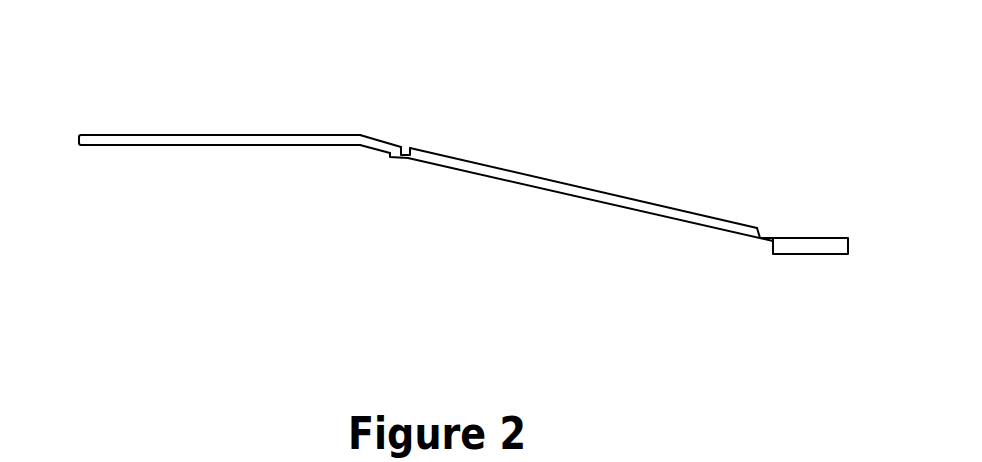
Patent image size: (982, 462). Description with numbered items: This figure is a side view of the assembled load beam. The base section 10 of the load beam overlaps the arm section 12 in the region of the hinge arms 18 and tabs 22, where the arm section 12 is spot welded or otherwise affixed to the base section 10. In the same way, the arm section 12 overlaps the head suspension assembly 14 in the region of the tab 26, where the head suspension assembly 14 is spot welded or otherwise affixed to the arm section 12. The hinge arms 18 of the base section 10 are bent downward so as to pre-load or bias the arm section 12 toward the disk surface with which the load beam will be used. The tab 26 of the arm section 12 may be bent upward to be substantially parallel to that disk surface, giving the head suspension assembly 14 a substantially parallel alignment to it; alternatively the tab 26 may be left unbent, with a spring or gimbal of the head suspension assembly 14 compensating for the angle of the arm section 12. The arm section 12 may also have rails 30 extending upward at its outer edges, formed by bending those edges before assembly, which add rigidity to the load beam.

The base section 10 is at (193, 135).
The arm section 12 is at (552, 178).
The head suspension assembly 14 is at (838, 237).
The hinge arms 18 is at (380, 140).
The tabs 22 is at (402, 146).
The tab 26 is at (768, 236).
The rails 30 is at (617, 200).